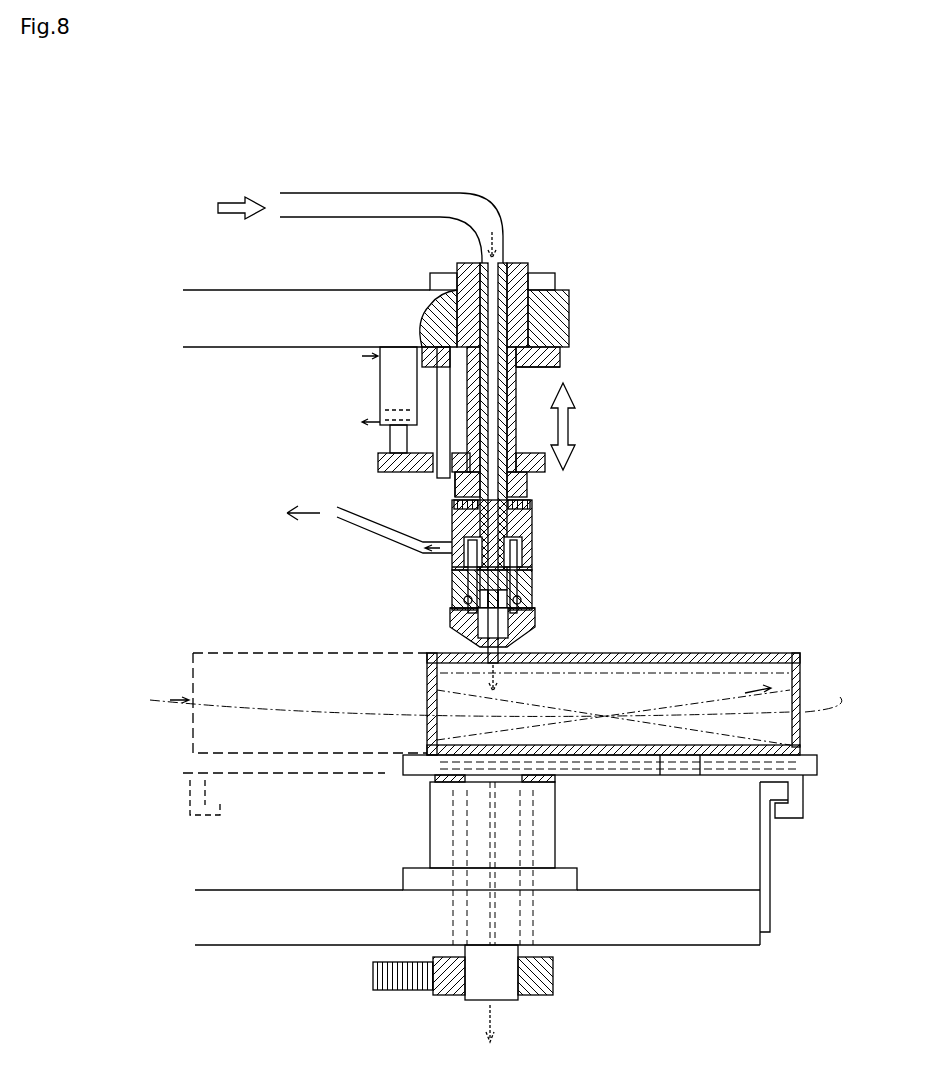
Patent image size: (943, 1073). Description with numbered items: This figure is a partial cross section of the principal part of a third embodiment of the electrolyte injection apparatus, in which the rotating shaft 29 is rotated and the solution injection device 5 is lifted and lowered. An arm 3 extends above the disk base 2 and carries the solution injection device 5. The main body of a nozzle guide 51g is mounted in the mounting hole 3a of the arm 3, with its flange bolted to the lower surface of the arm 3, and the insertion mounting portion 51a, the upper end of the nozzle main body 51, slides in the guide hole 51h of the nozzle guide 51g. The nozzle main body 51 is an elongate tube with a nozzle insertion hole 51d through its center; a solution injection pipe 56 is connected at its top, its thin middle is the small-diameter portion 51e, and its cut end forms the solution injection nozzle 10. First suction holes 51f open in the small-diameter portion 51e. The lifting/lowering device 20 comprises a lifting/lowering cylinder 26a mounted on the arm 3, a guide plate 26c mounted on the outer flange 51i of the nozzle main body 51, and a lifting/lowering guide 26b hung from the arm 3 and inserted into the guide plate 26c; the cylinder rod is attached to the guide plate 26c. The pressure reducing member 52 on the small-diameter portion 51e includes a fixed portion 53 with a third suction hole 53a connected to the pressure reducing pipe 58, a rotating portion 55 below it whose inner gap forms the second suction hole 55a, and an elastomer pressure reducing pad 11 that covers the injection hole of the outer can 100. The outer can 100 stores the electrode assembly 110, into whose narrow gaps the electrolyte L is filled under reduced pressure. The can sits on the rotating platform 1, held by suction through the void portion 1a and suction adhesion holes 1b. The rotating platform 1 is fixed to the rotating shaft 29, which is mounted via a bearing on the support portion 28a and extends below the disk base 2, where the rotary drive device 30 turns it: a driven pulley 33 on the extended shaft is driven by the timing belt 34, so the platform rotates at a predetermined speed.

The solution injection pipe 56 is at (333, 200).
The arm 3 is at (300, 310).
The mounting hole 3a is at (545, 322).
The nozzle main body 51 is at (540, 300).
The insertion mounting portion 51a is at (470, 270).
The nozzle insertion hole 51d is at (500, 300).
The nozzle guide 51g is at (550, 355).
The guide hole 51h is at (520, 372).
The outer flange 51i is at (456, 482).
The small-diameter portion 51e is at (460, 567).
The first suction hole 51f is at (508, 598).
The lifting/lowering device 20 is at (272, 422).
The lifting/lowering cylinder 26a is at (440, 392).
The lifting/lowering guide 26b is at (420, 372).
The guide plate 26c is at (388, 455).
The pressure reducing member 52 is at (547, 513).
The fixed portion 53 is at (530, 545).
The third suction hole 53a is at (518, 575).
The solution injection device 5 is at (598, 536).
The pressure reducing pipe 58 is at (372, 517).
The rotating portion 55 is at (456, 588).
The second suction hole 55a is at (525, 603).
The pressure reducing pad 11 is at (455, 610).
The solution injection nozzle 10 is at (460, 630).
The outer can 100 is at (440, 665).
The electrolyte L is at (501, 691).
The electrode assembly 110 is at (435, 700).
The rotating platform 1 is at (800, 760).
The void portion 1a is at (668, 773).
The suction adhesion hole 1b is at (696, 773).
The support portion 28a is at (548, 836).
The disk base 2 is at (285, 905).
The rotary drive device 30 is at (345, 986).
The rotating shaft 29 is at (475, 1000).
The driven pulley 33 is at (540, 998).
The timing belt 34 is at (400, 992).